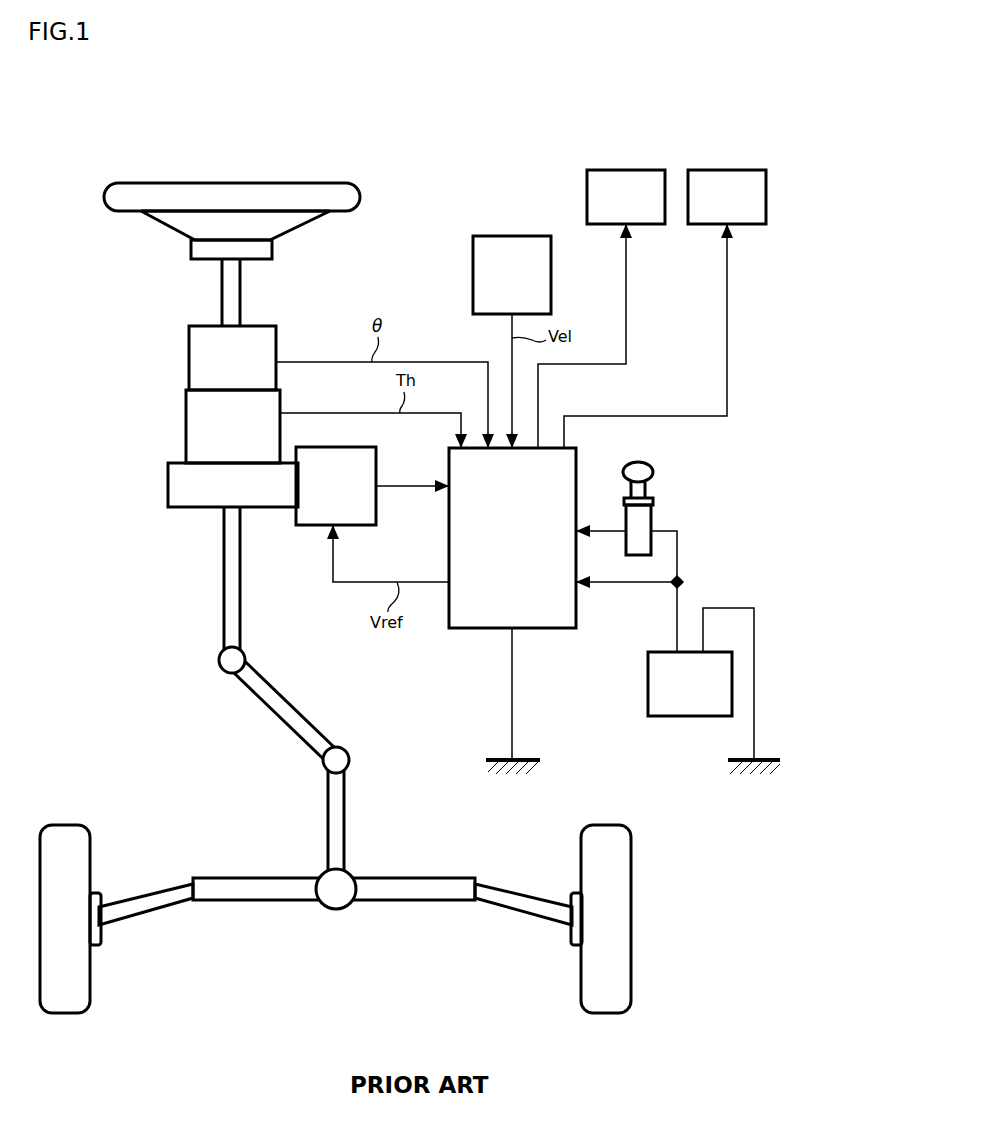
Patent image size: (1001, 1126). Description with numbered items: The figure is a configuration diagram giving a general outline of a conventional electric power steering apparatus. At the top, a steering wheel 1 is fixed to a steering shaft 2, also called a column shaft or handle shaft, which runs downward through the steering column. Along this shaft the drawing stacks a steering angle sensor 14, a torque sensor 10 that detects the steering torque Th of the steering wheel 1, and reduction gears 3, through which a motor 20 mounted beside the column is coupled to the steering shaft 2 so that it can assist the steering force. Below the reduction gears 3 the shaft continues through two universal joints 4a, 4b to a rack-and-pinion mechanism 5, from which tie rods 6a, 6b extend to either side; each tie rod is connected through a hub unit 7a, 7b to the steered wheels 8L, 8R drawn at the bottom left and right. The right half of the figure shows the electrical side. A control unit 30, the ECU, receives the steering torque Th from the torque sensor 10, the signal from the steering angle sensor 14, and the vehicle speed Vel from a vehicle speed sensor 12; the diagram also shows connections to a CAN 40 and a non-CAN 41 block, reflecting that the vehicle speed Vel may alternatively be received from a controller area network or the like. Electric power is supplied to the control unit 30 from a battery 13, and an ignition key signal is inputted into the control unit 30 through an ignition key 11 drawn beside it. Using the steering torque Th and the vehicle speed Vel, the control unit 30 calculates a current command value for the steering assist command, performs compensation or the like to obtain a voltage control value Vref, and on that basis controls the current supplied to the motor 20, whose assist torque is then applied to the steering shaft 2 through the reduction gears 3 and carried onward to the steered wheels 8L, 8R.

The steering wheel 1 is at (360, 198).
The steering shaft 2 is at (222, 302).
The reduction gears 3 is at (168, 494).
The universal joint 4a is at (219, 668).
The universal joint 4b is at (323, 769).
The rack-and-pinion mechanism 5 is at (352, 872).
The tie rod 6a is at (130, 896).
The tie rod 6b is at (505, 890).
The hub unit 7a is at (100, 942).
The hub unit 7b is at (572, 942).
The steered wheel 8L is at (90, 1005).
The steered wheel 8R is at (582, 1005).
The torque sensor 10 is at (186, 418).
The ignition key 11 is at (653, 472).
The vehicle speed sensor 12 is at (551, 252).
The battery 13 is at (648, 681).
The steering angle sensor 14 is at (189, 358).
The motor 20 is at (376, 462).
The control unit 30 is at (577, 455).
The CAN 40 is at (752, 170).
The non-CAN 41 is at (650, 170).